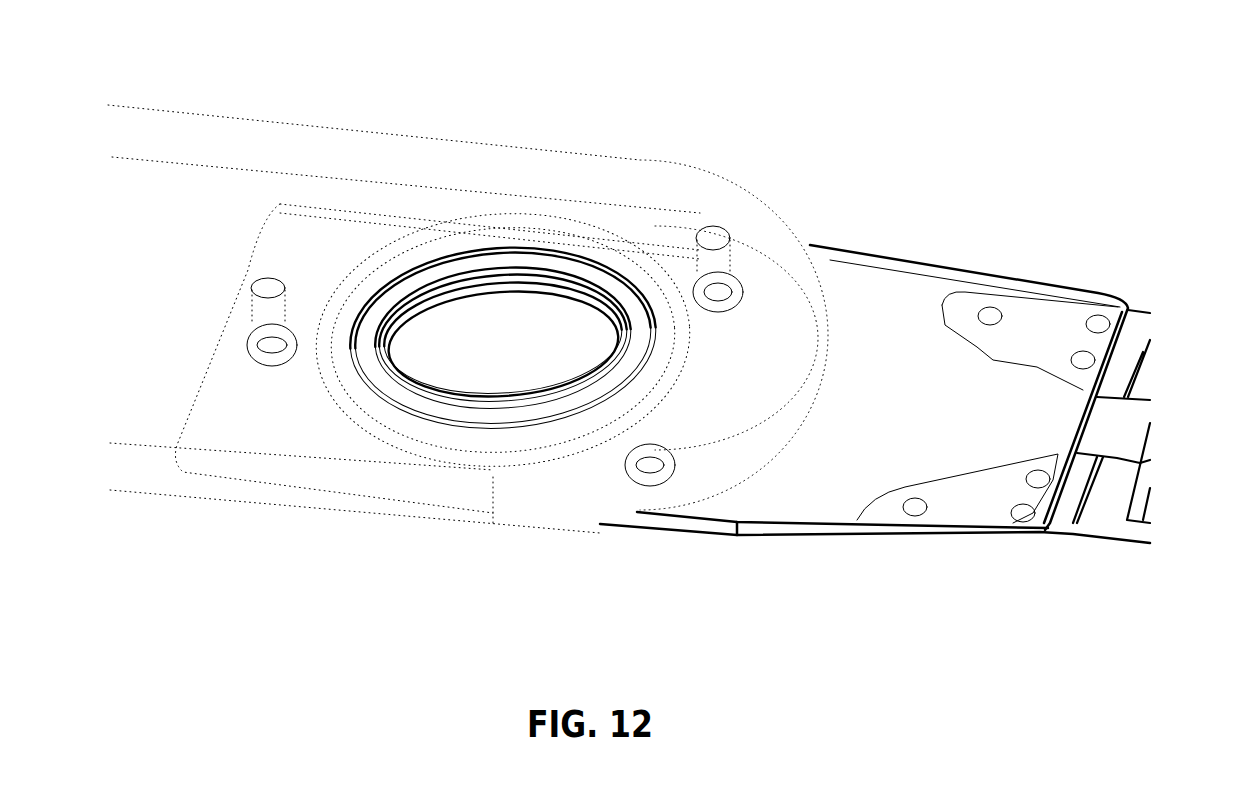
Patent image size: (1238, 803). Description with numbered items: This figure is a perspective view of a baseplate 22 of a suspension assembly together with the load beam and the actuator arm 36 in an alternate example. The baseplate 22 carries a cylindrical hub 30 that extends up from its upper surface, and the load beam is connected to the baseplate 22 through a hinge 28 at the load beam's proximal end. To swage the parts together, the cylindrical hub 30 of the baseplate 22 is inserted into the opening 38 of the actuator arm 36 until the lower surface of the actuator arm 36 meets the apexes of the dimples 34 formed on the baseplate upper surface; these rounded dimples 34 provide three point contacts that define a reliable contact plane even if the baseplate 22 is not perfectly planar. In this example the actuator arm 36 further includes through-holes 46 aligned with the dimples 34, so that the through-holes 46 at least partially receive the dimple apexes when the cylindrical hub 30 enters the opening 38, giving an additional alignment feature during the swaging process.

The actuator arm 36 is at (202, 118).
The cylindrical hub 30 is at (502, 258).
The opening 38 is at (570, 222).
The through-holes 46 is at (725, 230).
The dimples 34 is at (720, 306).
The baseplate 22 is at (907, 258).
The hinge 28 is at (1140, 310).